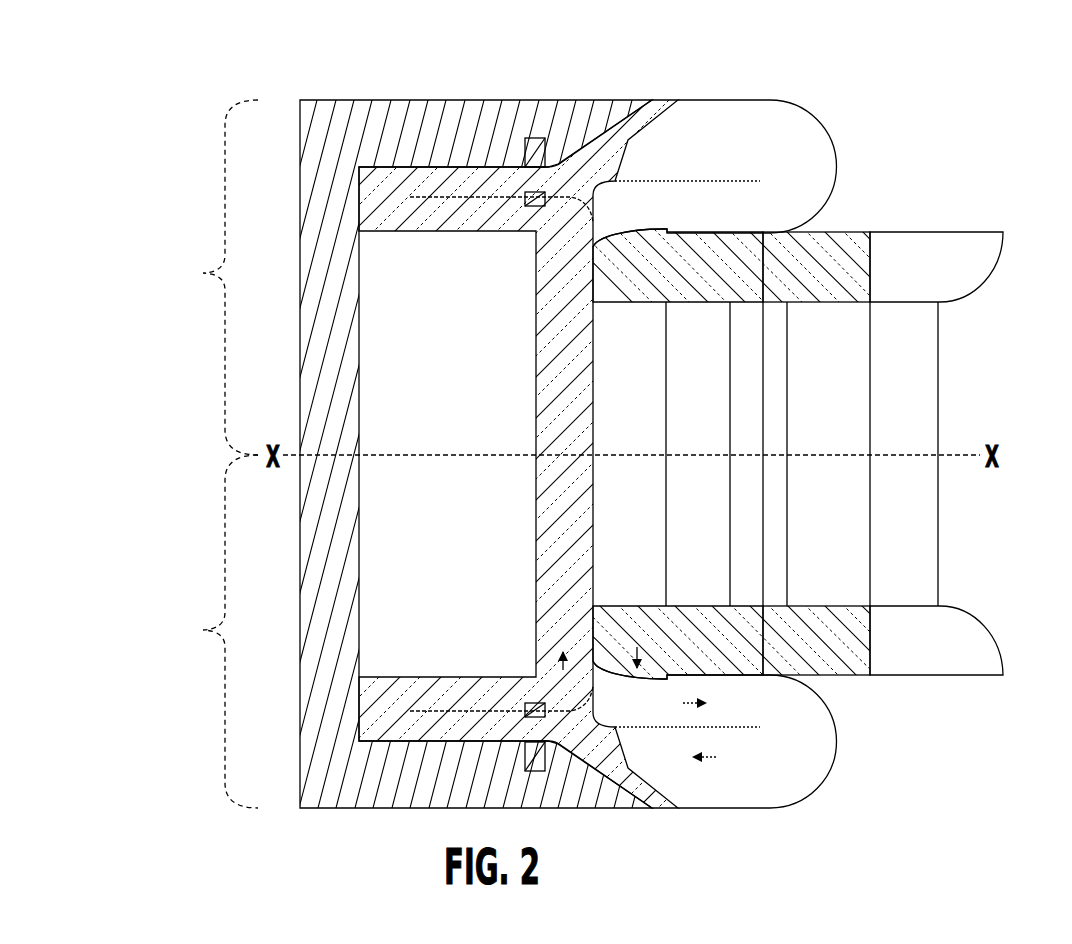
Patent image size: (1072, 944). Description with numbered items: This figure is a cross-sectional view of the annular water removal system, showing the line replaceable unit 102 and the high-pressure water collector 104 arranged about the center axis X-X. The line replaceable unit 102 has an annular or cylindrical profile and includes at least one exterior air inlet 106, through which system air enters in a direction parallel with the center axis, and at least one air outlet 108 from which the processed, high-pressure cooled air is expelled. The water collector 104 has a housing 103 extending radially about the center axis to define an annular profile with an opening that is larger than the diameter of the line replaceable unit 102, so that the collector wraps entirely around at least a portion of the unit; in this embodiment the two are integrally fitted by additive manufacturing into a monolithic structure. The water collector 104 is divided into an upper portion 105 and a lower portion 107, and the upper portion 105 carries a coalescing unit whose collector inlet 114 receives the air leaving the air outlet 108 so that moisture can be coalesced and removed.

The line replaceable unit 102 is at (957, 679).
The housing 103 is at (768, 99).
The high-pressure water collector 104 is at (574, 122).
The upper portion 105 is at (207, 277).
The exterior air inlet 106 is at (947, 646).
The lower portion 107 is at (207, 631).
The air outlet 108 is at (605, 635).
The collector inlet 114 is at (606, 642).